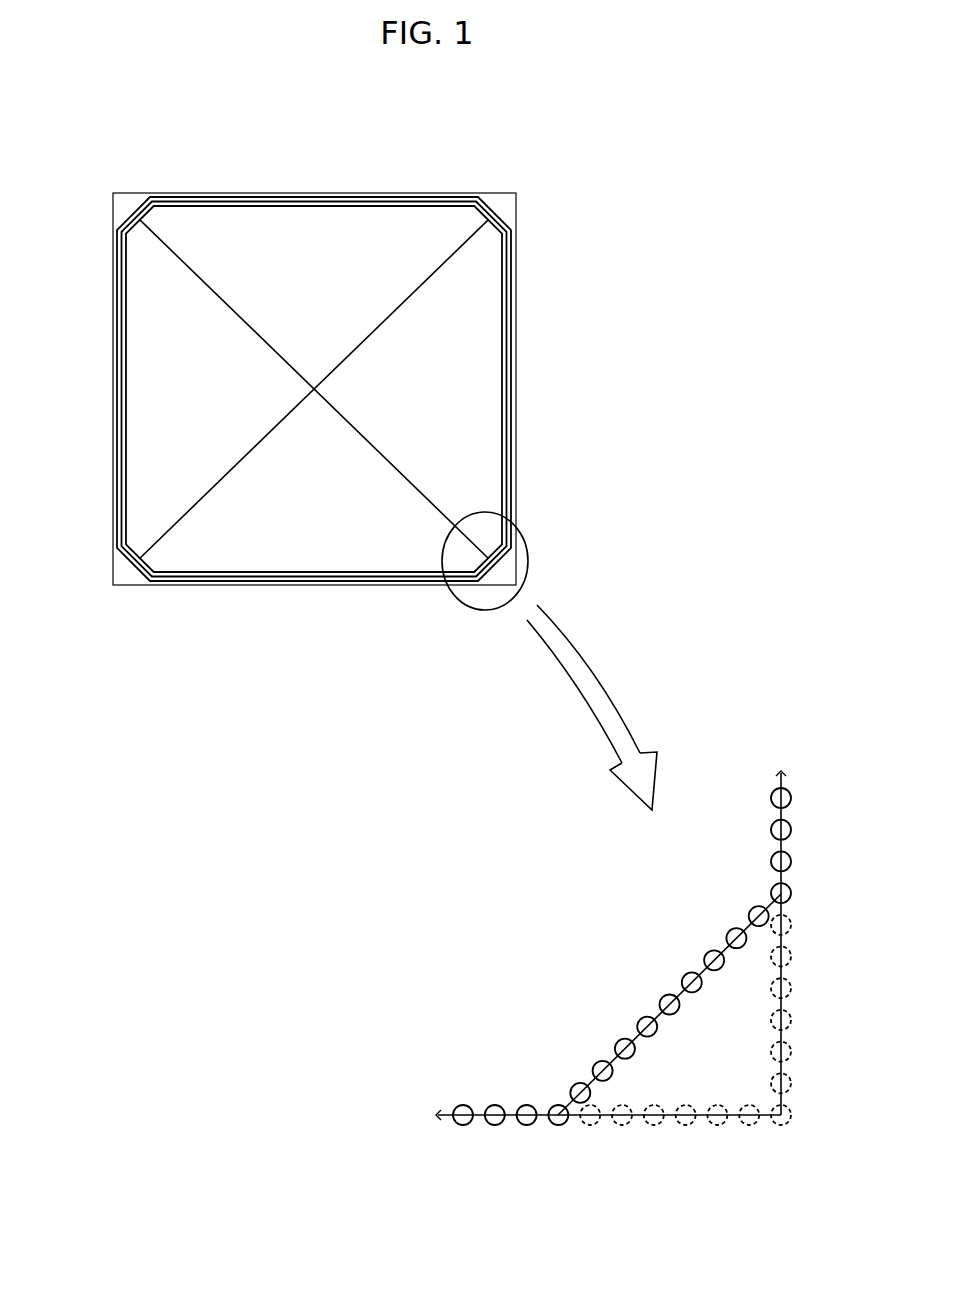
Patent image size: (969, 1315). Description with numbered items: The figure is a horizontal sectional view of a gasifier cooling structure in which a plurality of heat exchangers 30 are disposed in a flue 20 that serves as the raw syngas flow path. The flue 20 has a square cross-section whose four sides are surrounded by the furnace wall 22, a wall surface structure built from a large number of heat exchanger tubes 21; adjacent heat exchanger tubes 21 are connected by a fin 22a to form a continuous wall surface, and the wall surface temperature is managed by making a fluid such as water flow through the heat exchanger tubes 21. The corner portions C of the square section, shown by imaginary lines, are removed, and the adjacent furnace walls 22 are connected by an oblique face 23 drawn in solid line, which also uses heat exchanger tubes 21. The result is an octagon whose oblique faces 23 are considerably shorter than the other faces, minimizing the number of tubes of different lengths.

The flue 20 is at (374, 178).
The heat exchanger tube 21 is at (791, 830).
The furnace wall 22 is at (290, 192).
The fin 22a is at (511, 1125).
The oblique face 23 is at (134, 210).
The heat exchanger 30 is at (298, 548).
The corner portion C is at (130, 192).